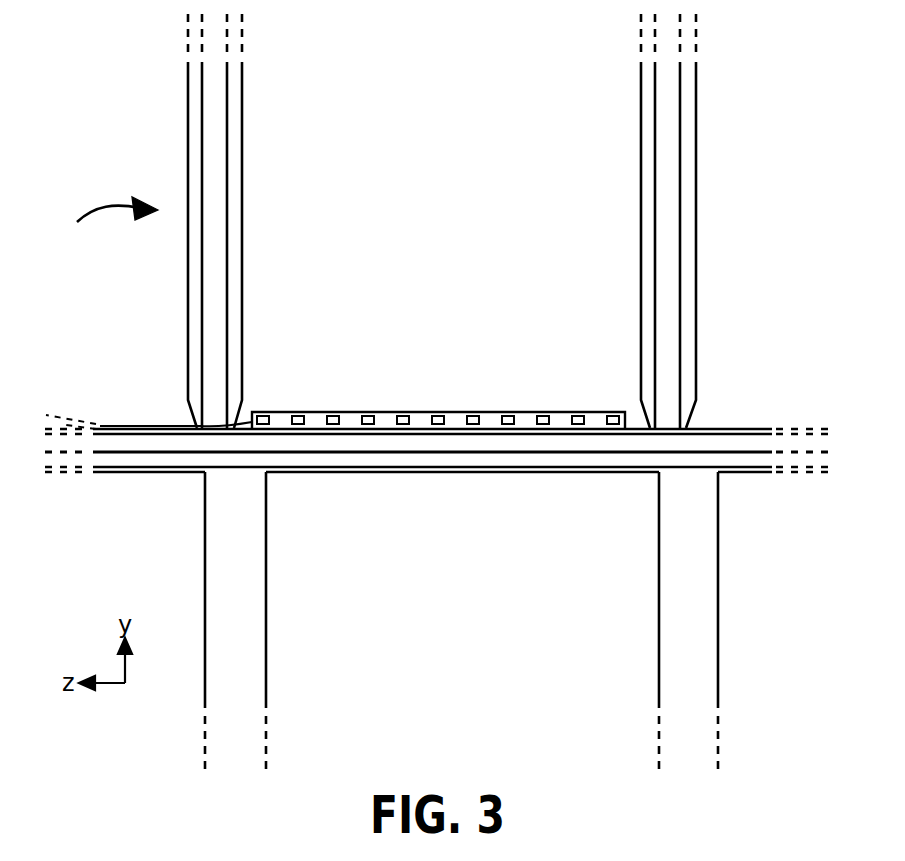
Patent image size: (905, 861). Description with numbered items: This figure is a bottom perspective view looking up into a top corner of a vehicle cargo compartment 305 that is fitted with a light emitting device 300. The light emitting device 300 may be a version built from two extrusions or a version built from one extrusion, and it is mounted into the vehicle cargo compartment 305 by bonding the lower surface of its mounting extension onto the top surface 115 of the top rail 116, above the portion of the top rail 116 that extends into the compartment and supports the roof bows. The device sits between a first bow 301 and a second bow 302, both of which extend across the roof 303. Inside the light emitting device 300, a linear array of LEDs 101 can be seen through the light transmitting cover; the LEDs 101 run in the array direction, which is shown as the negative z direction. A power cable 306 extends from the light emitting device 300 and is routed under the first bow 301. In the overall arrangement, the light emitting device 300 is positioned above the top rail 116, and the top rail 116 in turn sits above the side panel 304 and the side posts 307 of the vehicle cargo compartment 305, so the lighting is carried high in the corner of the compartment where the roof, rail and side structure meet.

The LEDs 101 is at (264, 412).
The top surface 115 is at (636, 427).
The top rail 116 is at (598, 445).
The light emitting device 300 is at (386, 412).
The first bow 301 is at (217, 290).
The second bow 302 is at (668, 213).
The roof 303 is at (437, 210).
The side panel 304 is at (438, 596).
The vehicle cargo compartment 305 is at (99, 227).
The power cable 306 is at (192, 420).
The side posts 307 is at (246, 678).